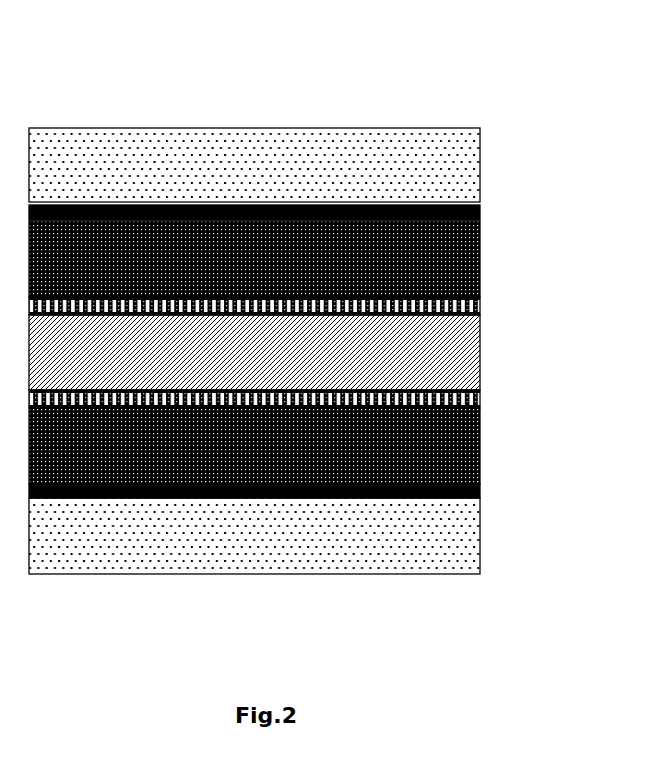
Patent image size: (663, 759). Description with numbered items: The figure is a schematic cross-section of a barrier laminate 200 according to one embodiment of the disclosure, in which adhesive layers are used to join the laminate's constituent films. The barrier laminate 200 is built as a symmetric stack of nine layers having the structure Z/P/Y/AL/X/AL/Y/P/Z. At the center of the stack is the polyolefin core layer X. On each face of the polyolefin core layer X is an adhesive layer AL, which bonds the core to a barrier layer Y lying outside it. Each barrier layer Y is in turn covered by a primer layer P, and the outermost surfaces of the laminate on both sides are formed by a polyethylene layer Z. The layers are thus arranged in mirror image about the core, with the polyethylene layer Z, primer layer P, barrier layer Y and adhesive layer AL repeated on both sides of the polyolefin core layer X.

The barrier laminate 200 is at (282, 76).
The polyethylene layer Z is at (480, 162).
The primer layer P is at (480, 212).
The barrier layer Y is at (480, 257).
The adhesive layer AL is at (480, 303).
The polyolefin core layer X is at (480, 352).